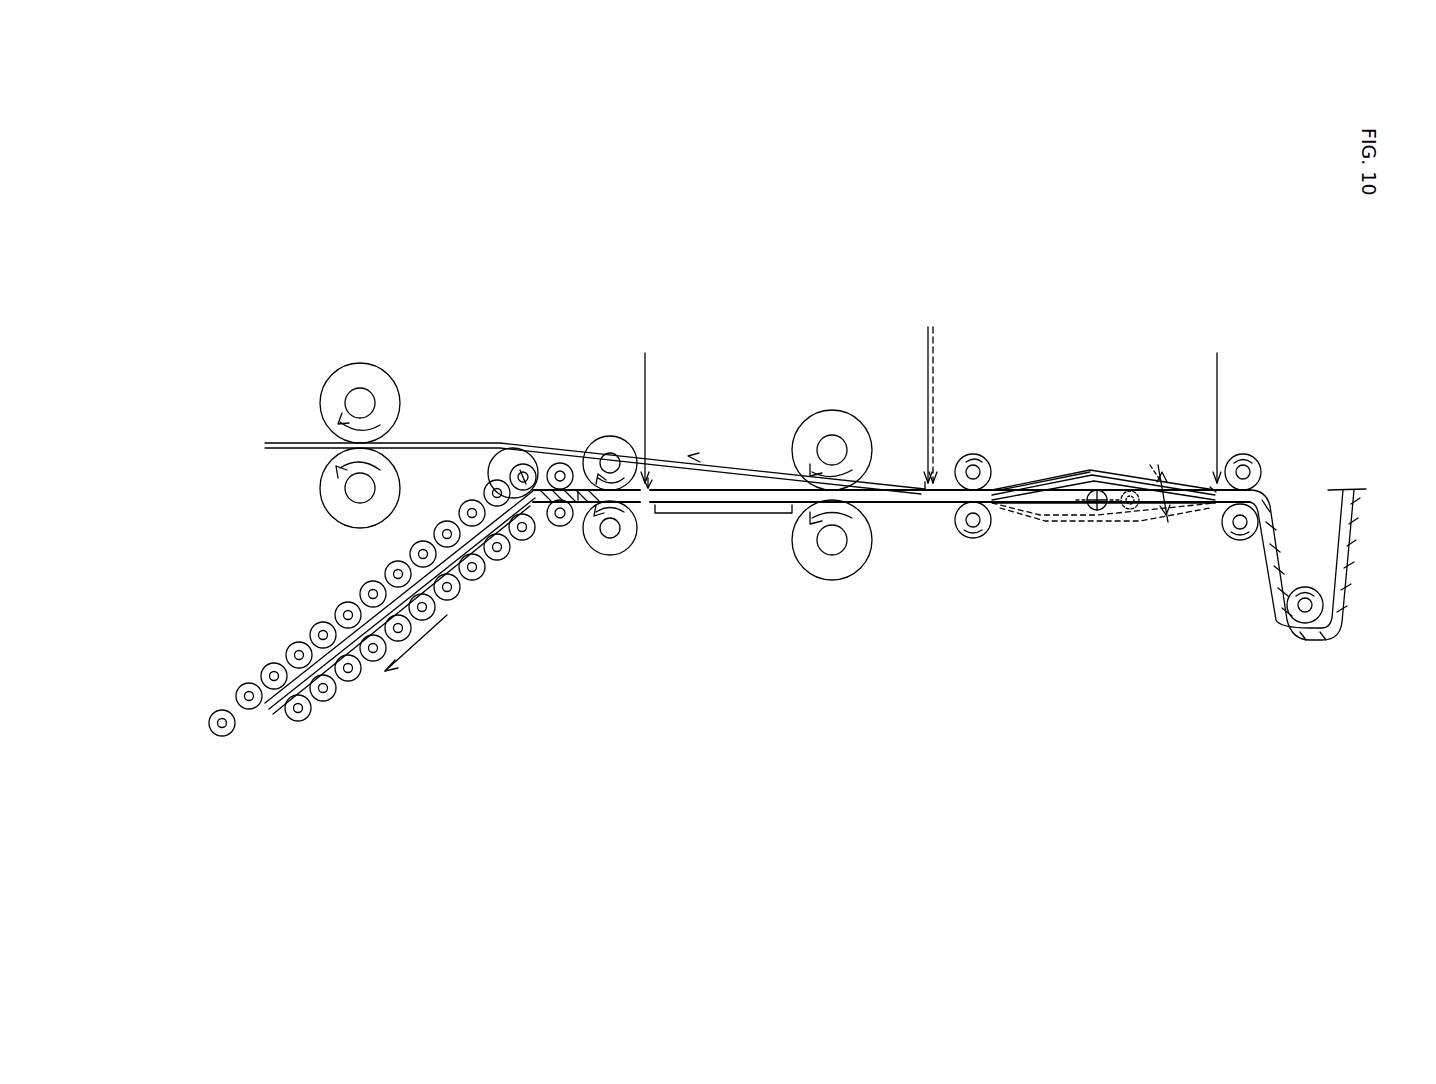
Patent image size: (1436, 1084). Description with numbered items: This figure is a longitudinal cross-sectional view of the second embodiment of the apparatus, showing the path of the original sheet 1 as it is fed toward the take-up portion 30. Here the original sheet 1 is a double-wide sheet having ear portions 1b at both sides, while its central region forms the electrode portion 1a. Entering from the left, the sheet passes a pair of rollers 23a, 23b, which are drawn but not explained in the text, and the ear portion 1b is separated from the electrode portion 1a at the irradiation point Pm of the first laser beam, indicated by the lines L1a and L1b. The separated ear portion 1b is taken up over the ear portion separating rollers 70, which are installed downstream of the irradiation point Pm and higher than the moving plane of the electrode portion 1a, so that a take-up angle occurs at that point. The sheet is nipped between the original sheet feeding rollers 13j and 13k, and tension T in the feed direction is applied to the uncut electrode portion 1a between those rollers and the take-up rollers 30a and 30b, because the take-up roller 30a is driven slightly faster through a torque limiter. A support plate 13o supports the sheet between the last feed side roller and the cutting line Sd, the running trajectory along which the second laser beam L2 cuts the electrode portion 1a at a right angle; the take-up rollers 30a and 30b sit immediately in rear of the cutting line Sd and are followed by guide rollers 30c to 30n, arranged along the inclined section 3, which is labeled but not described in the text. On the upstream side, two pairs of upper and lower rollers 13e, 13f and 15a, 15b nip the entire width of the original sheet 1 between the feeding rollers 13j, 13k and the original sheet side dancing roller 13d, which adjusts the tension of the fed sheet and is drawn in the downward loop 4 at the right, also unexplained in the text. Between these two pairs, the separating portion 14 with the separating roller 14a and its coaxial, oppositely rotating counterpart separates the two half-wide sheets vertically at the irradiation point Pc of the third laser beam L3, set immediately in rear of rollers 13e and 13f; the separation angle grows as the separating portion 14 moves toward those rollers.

The original sheet 1 is at (1366, 547).
The electrode portion 1a is at (1046, 486).
The ear portion 1b is at (443, 440).
The conveying path 3 is at (313, 647).
The discharge path 4 is at (1264, 493).
The original sheet side dancing roller 13d is at (1290, 612).
The upper roller 13e is at (1247, 455).
The lower roller 13f is at (1235, 539).
The original sheet feeding roller 13j is at (838, 425).
The original sheet feeding roller 13k is at (858, 548).
The support plate 13o is at (745, 516).
The separating portion 14 is at (1103, 483).
The separating roller 14a is at (1097, 512).
The upper roller 15a is at (972, 454).
The lower roller 15b is at (970, 539).
The roller 23a is at (372, 382).
The roller 23b is at (338, 507).
The take-up portion 30 is at (597, 483).
The take-up roller 30a is at (603, 448).
The take-up roller 30b is at (612, 545).
The guide roller 30c is at (556, 463).
The guide roller 30n is at (212, 708).
The ear portion separating rollers 70 is at (480, 479).
The line L1a is at (926, 340).
The line L1b is at (938, 360).
The second laser beam L2 is at (646, 372).
The third laser beam L3 is at (1214, 366).
The irradiation point Pc is at (1210, 485).
The irradiation point Pm is at (925, 487).
The cutting line Sd is at (648, 505).
The tension T is at (578, 503).